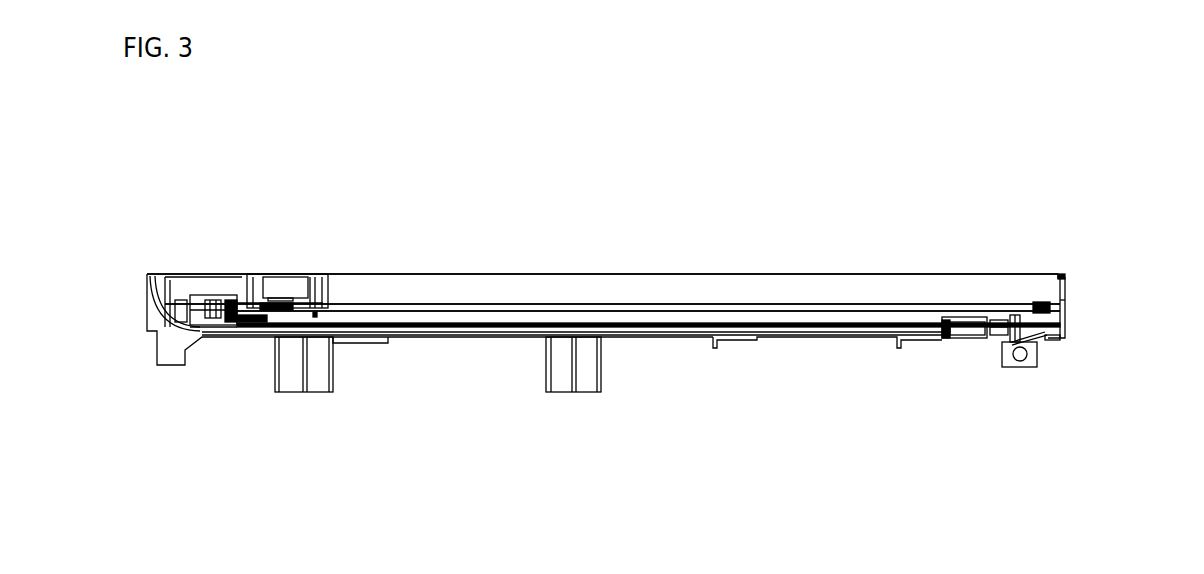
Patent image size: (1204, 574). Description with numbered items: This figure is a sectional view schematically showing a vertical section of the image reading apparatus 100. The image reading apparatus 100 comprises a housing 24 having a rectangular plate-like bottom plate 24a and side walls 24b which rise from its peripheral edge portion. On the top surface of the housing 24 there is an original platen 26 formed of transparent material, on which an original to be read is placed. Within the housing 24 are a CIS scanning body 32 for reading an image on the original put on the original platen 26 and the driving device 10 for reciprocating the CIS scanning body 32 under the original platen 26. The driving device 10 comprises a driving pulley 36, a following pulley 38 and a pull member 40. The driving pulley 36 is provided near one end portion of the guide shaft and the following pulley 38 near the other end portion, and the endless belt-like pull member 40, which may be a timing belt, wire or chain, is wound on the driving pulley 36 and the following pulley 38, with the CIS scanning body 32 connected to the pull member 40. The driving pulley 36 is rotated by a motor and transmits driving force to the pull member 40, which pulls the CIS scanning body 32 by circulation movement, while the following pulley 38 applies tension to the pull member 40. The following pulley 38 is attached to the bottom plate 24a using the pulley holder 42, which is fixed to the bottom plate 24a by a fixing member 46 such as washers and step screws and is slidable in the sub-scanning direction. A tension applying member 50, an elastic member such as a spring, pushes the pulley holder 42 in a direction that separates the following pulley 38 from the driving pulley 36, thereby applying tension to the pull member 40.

The image reading apparatus 100 is at (198, 144).
The driving device 10 is at (858, 293).
The housing 24 is at (1071, 285).
The bottom plate 24a is at (738, 328).
The side wall 24b is at (1067, 307).
The original platen 26 is at (648, 273).
The CIS scanning body 32 is at (297, 276).
The driving pulley 36 is at (232, 318).
The following pulley 38 is at (1033, 303).
The pull member 40 is at (800, 310).
The pulley holder 42 is at (1000, 315).
The fixing member 46 is at (1018, 315).
The tension applying member 50 is at (968, 323).